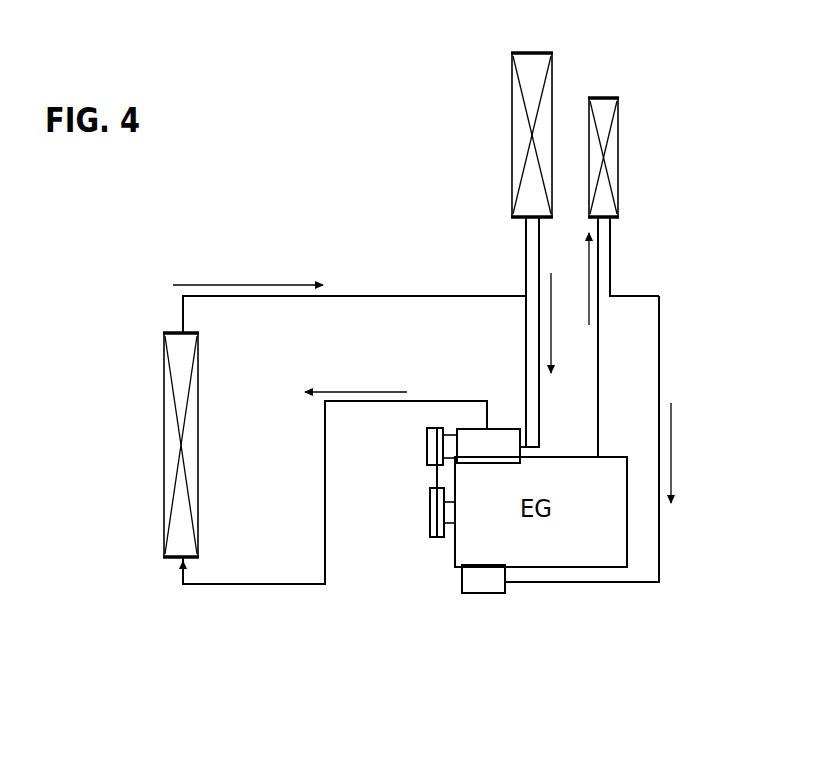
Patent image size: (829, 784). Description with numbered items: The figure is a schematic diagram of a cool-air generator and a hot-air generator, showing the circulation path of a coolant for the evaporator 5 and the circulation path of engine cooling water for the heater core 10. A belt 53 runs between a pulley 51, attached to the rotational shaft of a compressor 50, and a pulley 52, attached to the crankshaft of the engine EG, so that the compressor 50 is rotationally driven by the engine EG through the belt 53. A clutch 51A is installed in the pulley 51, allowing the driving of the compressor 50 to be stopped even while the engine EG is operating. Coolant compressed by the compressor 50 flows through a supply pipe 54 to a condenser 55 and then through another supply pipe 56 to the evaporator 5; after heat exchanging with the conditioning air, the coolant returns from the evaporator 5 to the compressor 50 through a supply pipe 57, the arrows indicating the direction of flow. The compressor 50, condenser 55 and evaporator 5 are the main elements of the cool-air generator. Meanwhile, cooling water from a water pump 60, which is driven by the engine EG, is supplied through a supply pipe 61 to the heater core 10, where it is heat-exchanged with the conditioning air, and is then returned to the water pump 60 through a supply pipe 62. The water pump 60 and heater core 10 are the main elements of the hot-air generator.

The evaporator 5 is at (527, 60).
The heater core 10 is at (602, 102).
The compressor 50 is at (503, 438).
The pulley 51 is at (430, 443).
The clutch 51A is at (397, 461).
The pulley 52 is at (430, 517).
The belt 53 is at (437, 478).
The supply pipe 54 is at (242, 587).
The condenser 55 is at (163, 437).
The supply pipe 56 is at (397, 295).
The supply pipe 57 is at (540, 410).
The water pump 60 is at (483, 586).
The supply pipe 61 is at (599, 357).
The supply pipe 62 is at (659, 535).